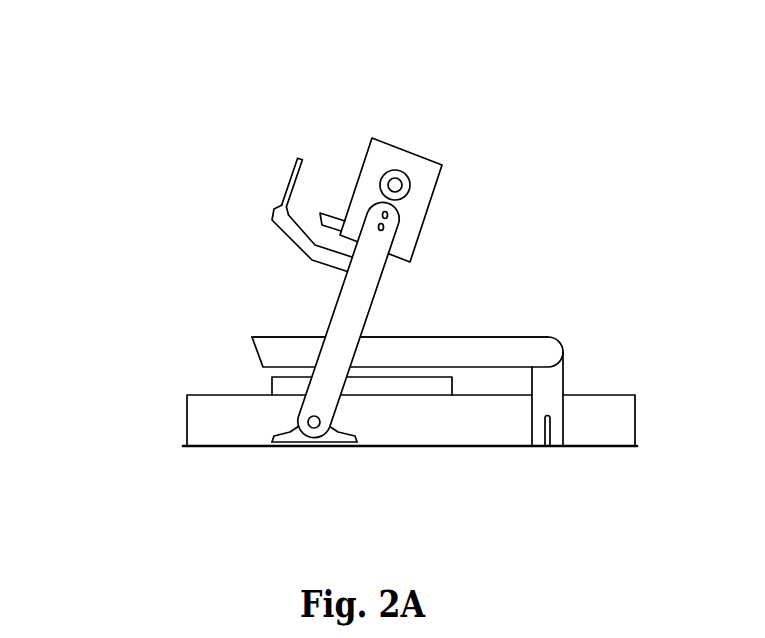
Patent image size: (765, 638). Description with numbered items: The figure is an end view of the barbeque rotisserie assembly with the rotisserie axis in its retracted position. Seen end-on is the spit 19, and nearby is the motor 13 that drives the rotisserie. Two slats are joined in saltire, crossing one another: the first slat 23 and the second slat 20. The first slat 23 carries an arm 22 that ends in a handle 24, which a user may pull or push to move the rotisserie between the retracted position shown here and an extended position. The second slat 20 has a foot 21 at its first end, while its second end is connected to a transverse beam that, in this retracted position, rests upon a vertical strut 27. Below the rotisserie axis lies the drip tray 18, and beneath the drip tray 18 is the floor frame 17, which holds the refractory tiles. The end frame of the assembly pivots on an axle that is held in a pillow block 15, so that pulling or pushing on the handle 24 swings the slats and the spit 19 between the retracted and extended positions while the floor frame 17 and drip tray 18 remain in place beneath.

The motor 13 is at (420, 153).
The pillow block 15 is at (297, 437).
The floor frame 17 is at (187, 422).
The drip tray 18 is at (383, 387).
The spit 19 is at (395, 185).
The second slat 20 is at (462, 337).
The foot 21 is at (258, 357).
The arm 22 is at (305, 255).
The first slat 23 is at (368, 312).
The handle 24 is at (293, 180).
The vertical strut 27 is at (565, 379).